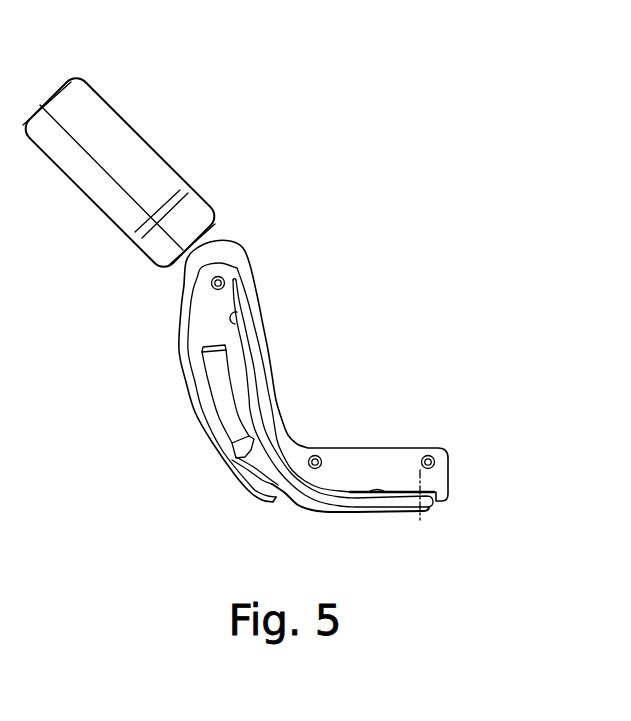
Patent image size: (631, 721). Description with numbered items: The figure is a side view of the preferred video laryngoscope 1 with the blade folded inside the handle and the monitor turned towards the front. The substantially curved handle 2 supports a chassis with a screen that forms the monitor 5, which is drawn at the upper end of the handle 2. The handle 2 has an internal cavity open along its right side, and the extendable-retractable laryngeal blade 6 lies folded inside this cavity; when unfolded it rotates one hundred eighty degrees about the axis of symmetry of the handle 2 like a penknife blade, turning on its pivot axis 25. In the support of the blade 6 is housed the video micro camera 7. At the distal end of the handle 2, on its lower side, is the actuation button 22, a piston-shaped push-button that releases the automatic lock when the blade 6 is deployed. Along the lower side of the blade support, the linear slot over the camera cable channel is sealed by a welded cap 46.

The video laryngoscope 1 is at (300, 143).
The handle 2 is at (167, 369).
The monitor 5 is at (138, 105).
The laryngeal blade 6 is at (250, 368).
The video micro camera 7 is at (220, 398).
The actuation button 22 is at (370, 495).
The pivot axis 25 is at (420, 517).
The cap 46 is at (299, 503).